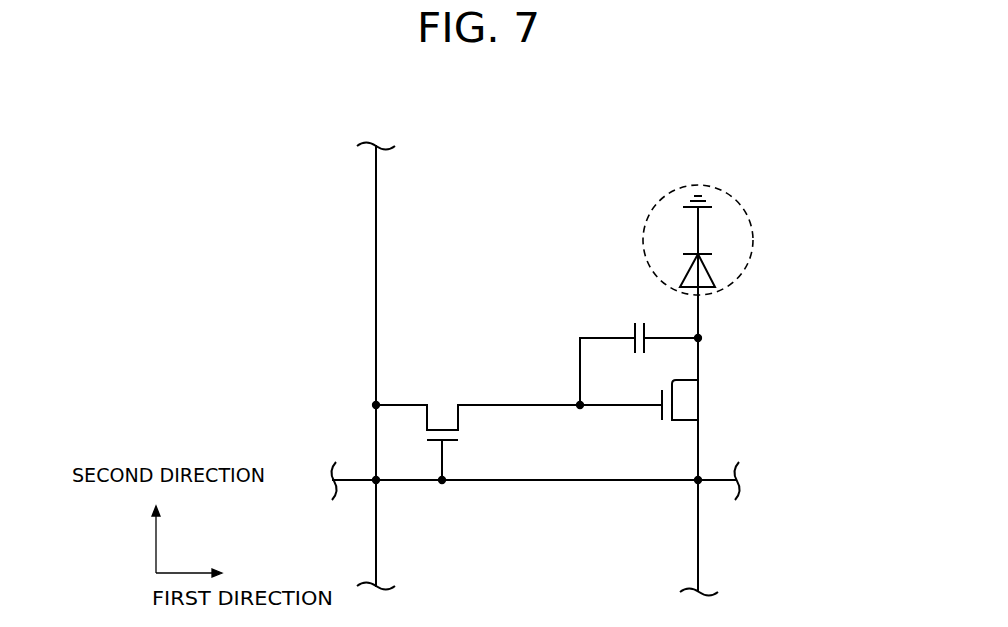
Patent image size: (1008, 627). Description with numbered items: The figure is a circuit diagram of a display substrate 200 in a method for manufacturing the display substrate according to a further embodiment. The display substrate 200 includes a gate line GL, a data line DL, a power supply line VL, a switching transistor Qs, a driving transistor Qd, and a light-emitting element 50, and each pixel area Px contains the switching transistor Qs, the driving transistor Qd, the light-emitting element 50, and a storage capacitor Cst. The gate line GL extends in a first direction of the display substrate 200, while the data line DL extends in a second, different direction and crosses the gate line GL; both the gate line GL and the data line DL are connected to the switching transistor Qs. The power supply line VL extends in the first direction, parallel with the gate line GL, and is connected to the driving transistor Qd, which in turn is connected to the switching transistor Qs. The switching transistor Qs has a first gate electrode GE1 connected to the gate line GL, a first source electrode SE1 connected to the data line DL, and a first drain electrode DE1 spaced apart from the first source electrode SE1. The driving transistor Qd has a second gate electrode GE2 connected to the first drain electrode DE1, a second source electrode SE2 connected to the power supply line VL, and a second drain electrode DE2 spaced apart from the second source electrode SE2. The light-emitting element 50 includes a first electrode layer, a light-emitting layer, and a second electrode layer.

The display substrate 200 is at (556, 114).
The pixel area Px is at (546, 232).
The light-emitting element 50 is at (752, 235).
The data line DL is at (375, 572).
The gate line GL is at (718, 481).
The power supply line VL is at (698, 568).
The switching transistor Qs is at (527, 527).
The driving transistor Qd is at (786, 345).
The storage capacitor Cst is at (641, 350).
The first source electrode SE1 is at (415, 405).
The first gate electrode GE1 is at (448, 450).
The first drain electrode DE1 is at (508, 405).
The second source electrode SE2 is at (698, 425).
The second gate electrode GE2 is at (700, 380).
The second drain electrode DE2 is at (698, 348).